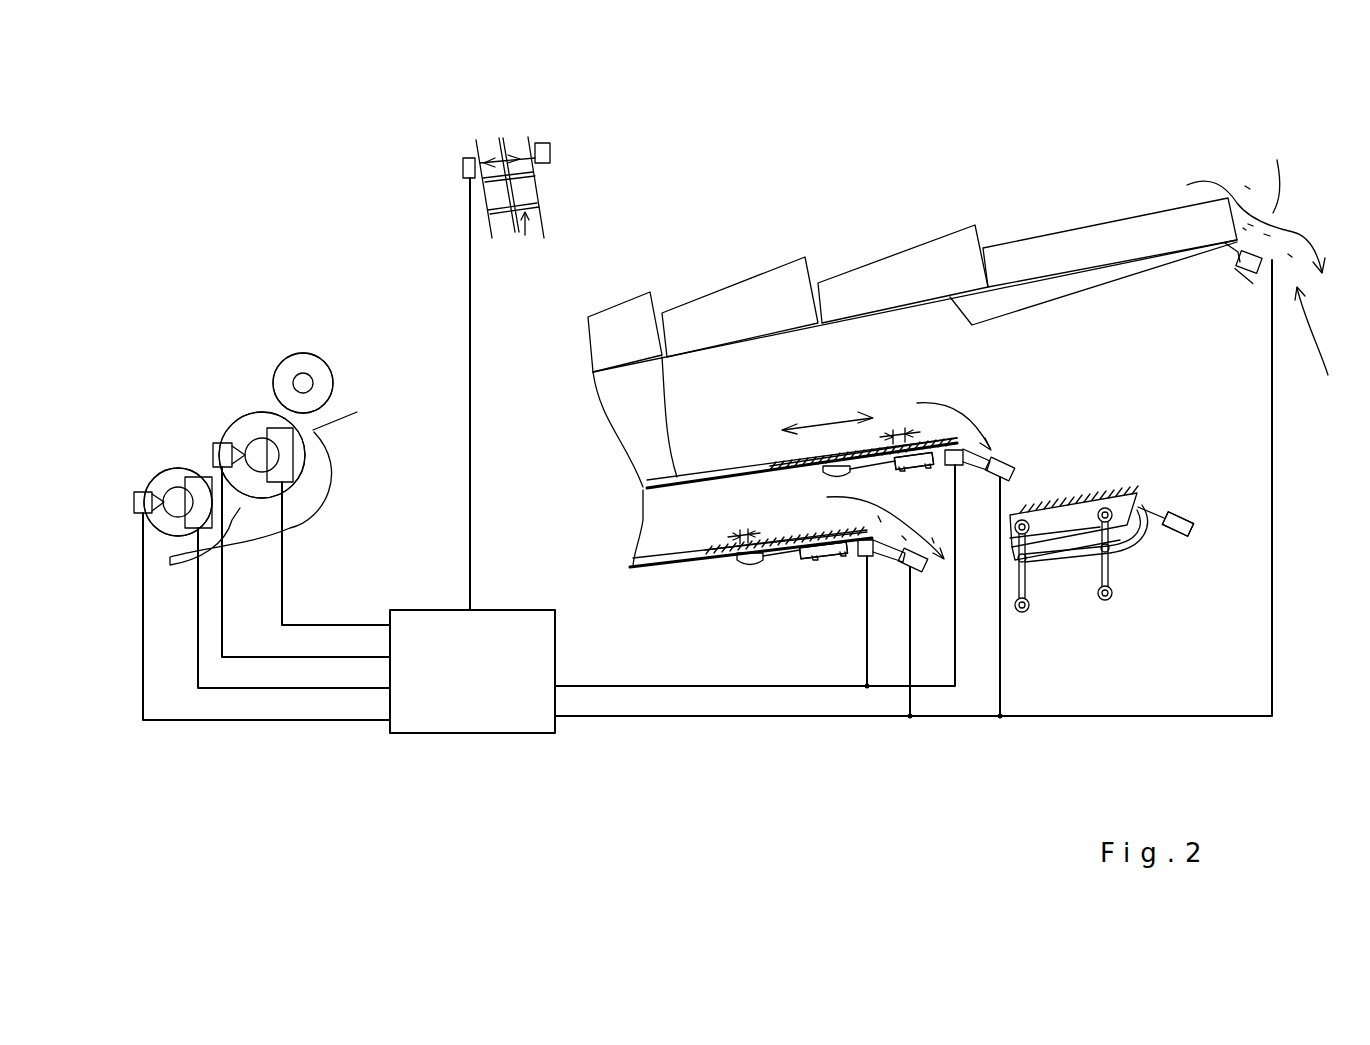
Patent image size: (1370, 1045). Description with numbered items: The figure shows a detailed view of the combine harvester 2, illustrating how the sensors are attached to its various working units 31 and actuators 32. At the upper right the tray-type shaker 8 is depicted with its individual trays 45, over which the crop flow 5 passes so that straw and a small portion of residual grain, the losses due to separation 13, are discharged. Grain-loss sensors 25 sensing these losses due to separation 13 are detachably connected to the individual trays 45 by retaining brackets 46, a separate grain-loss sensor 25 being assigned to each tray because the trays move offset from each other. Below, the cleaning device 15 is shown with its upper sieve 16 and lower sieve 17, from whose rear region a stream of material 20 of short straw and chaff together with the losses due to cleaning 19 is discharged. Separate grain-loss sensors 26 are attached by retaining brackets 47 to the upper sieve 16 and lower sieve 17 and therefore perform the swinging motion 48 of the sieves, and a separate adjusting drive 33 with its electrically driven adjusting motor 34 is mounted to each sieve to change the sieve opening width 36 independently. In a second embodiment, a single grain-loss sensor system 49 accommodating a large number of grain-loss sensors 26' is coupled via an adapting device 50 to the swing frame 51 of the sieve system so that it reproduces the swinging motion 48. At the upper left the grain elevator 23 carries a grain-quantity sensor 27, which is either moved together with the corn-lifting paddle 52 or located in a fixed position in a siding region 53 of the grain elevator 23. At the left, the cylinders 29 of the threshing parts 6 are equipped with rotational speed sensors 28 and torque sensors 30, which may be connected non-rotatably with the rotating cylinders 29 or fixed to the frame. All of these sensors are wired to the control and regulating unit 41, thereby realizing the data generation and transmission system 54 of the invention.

The combine harvester 2 is at (781, 405).
The crop flow 5 is at (1277, 160).
The threshing parts 6 is at (312, 518).
The tray-type shaker 8 is at (791, 315).
The losses due to separation 13 is at (1321, 343).
The cleaning device 15 is at (712, 528).
The upper sieve 16 is at (675, 477).
The lower sieve 17 is at (660, 566).
The losses due to cleaning 19 is at (1023, 452).
The stream of material 20 is at (1003, 453).
The grain elevator 23 is at (548, 188).
The grain-loss sensor 25 is at (1246, 272).
The grain-loss sensor 26 is at (1005, 535).
The grain-loss sensor 26' is at (1177, 524).
The grain-quantity sensor 27 is at (462, 162).
The rotational speed sensor 28 is at (133, 497).
The cylinder 29 is at (160, 480).
The torque sensor 30 is at (197, 477).
The working units 31 is at (303, 383).
The actuators 32 is at (950, 448).
The adjusting drive 33 is at (955, 466).
The adjusting motor 34 is at (867, 505).
The sieve opening width 36 is at (899, 428).
The control and regulating unit 41 is at (481, 695).
The individual tray 45 is at (892, 265).
The retaining bracket 46 is at (1233, 253).
The retaining bracket 47 is at (880, 562).
The swinging motion 48 is at (830, 425).
The grain-loss sensor system 49 is at (1182, 517).
The adapting device 50 is at (1135, 542).
The swing frame 51 is at (1055, 563).
The corn-lifting paddle 52 is at (542, 173).
The siding region 53 is at (493, 233).
The data generation and transmission system 54 is at (308, 748).